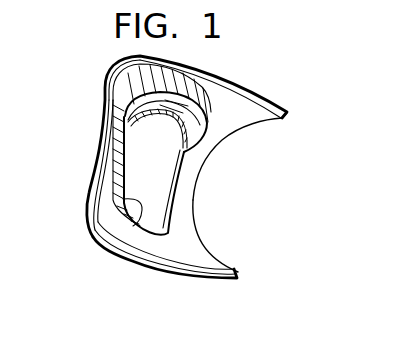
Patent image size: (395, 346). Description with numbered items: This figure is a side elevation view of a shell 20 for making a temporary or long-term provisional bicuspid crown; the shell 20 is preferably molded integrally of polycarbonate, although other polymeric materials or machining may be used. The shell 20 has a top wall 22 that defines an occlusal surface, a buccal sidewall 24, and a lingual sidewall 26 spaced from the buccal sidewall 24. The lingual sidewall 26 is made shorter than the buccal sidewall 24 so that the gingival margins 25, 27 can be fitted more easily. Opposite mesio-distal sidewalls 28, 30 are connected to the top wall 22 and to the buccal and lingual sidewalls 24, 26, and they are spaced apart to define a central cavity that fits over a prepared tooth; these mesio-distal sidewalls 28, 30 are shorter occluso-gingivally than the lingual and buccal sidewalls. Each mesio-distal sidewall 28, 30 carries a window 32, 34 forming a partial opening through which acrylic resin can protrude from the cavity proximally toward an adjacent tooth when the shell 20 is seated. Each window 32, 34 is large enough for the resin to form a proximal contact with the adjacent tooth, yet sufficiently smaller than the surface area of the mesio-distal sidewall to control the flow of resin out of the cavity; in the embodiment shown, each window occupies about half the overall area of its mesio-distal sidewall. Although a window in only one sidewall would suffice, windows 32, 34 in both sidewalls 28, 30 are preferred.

The shell 20 is at (110, 252).
The top wall 22 is at (97, 166).
The buccal sidewall 24 is at (200, 66).
The gingival margin 25 is at (286, 113).
The lingual sidewall 26 is at (137, 262).
The gingival margin 27 is at (240, 275).
The mesio-distal sidewall 28 is at (172, 122).
The mesio-distal sidewall 30 is at (180, 193).
The window 32 is at (122, 124).
The window 34 is at (122, 200).